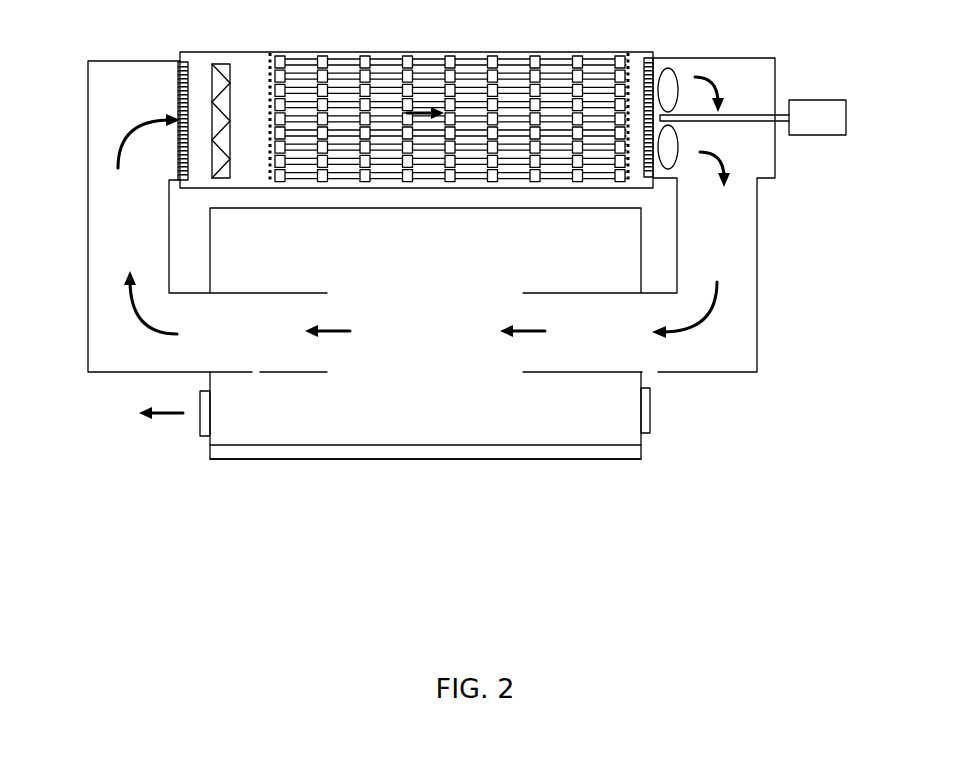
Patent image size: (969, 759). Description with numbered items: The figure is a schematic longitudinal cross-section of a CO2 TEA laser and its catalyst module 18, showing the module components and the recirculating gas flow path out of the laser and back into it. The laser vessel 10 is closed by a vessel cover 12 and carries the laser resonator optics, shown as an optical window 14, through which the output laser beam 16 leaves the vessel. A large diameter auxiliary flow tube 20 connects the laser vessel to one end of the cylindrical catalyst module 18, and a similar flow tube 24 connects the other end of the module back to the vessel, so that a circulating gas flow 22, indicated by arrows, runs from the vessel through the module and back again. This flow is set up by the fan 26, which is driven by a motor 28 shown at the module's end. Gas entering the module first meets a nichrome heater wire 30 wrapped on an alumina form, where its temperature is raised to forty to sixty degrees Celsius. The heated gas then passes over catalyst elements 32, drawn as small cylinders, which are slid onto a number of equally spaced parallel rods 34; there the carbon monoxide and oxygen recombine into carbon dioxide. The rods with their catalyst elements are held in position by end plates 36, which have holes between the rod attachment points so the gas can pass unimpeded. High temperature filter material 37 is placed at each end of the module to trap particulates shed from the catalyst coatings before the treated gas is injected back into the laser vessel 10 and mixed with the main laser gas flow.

The laser vessel 10 is at (590, 417).
The vessel cover 12 is at (368, 460).
The optical window 14 is at (205, 416).
The output laser beam 16 is at (165, 417).
The catalyst module 18 is at (545, 48).
The auxiliary flow tube 20 is at (88, 273).
The gas flow 22 is at (150, 118).
The flow tube 24 is at (757, 256).
The fan 26 is at (677, 72).
The fan motor 28 is at (798, 100).
The nichrome heater wire 30 is at (230, 67).
The catalyst elements 32 is at (408, 62).
The parallel rods 34 is at (477, 62).
The end plates 36 is at (272, 58).
The high temperature filter material 37 is at (183, 62).